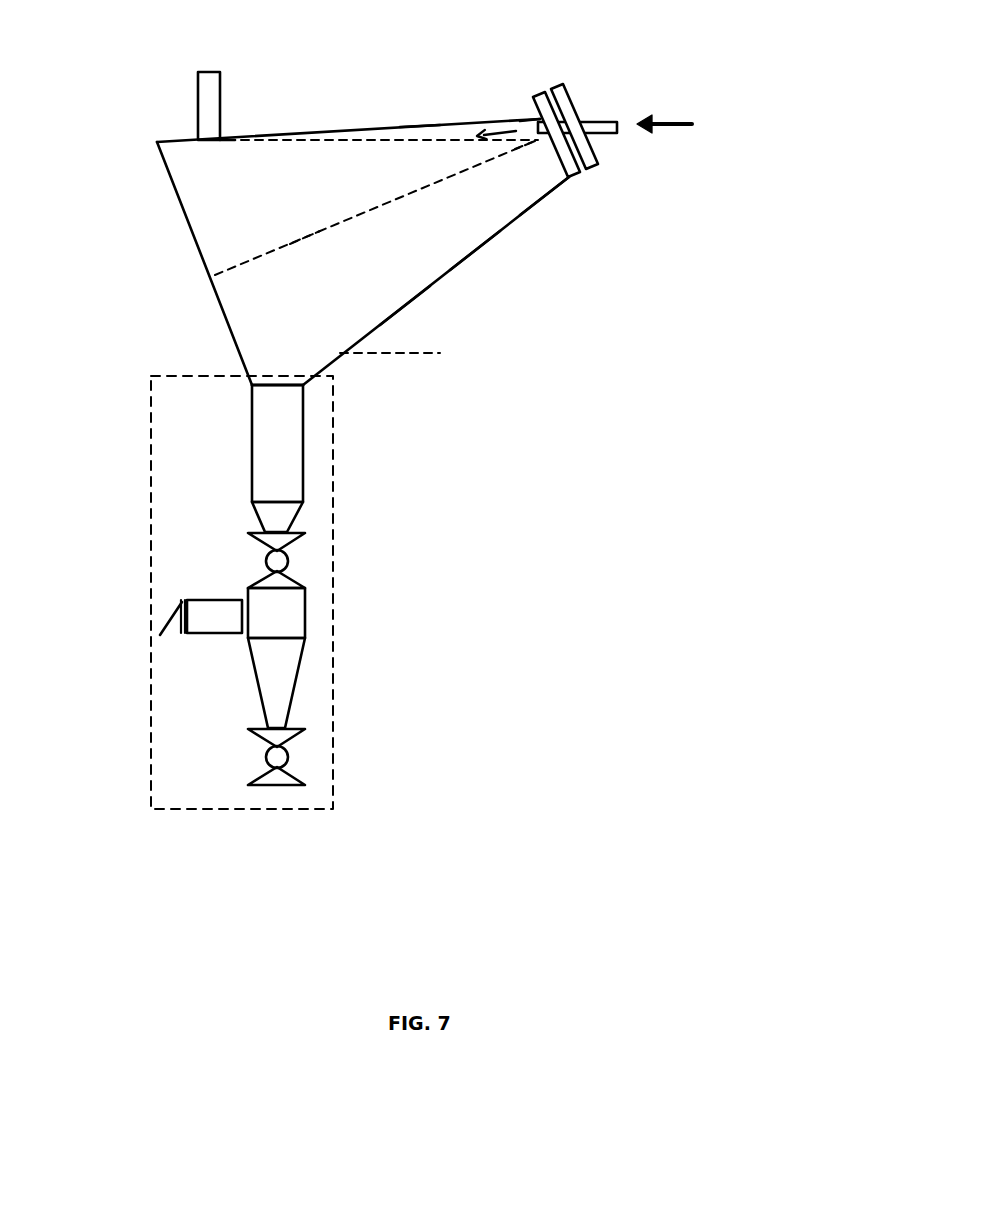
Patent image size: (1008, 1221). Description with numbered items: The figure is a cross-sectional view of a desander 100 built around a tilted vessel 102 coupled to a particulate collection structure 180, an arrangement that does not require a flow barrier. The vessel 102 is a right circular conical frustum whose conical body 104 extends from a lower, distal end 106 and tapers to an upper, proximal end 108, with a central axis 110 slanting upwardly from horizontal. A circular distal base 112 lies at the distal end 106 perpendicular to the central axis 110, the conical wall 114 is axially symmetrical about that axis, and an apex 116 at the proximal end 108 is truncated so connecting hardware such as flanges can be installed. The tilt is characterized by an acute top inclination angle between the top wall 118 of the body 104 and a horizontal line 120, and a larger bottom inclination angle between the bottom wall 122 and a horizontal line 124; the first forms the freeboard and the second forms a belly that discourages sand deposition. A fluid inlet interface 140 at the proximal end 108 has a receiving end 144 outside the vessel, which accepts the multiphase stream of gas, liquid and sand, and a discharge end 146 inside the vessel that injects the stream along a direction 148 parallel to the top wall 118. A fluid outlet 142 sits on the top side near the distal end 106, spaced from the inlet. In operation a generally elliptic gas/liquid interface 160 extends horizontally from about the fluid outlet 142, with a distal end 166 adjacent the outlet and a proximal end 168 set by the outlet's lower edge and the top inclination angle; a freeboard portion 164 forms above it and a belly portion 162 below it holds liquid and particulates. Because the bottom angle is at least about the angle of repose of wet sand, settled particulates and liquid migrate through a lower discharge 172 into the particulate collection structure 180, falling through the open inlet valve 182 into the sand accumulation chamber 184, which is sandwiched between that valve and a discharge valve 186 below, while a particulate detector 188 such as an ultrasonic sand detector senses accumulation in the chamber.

The desander 100 is at (644, 431).
The vessel 102 is at (634, 294).
The conical body 104 is at (546, 186).
The distal end 106 is at (128, 197).
The proximal end 108 is at (614, 74).
The central axis 110 is at (303, 242).
The distal base 112 is at (187, 228).
The conical wall 114 is at (513, 218).
The apex 116 is at (592, 95).
The top wall 118 is at (287, 130).
The horizontal line 120 is at (455, 141).
The bottom wall 122 is at (473, 249).
The horizontal line 124 is at (390, 353).
The fluid inlet interface 140 is at (604, 182).
The fluid outlet 142 is at (212, 80).
The receiving end 144 is at (607, 120).
The discharge end 146 is at (538, 128).
The direction 148 is at (484, 133).
The gas/liquid interface 160 is at (298, 143).
The belly portion 162 is at (393, 268).
The freeboard portion 164 is at (427, 133).
The distal end 166 is at (227, 143).
The proximal end 168 is at (531, 142).
The lower discharge 172 is at (271, 368).
The particulate collection structure 180 is at (148, 433).
The inlet valve 182 is at (289, 558).
The sand accumulation chamber 184 is at (307, 607).
The discharge valve 186 is at (289, 758).
The particulate detector 188 is at (162, 618).